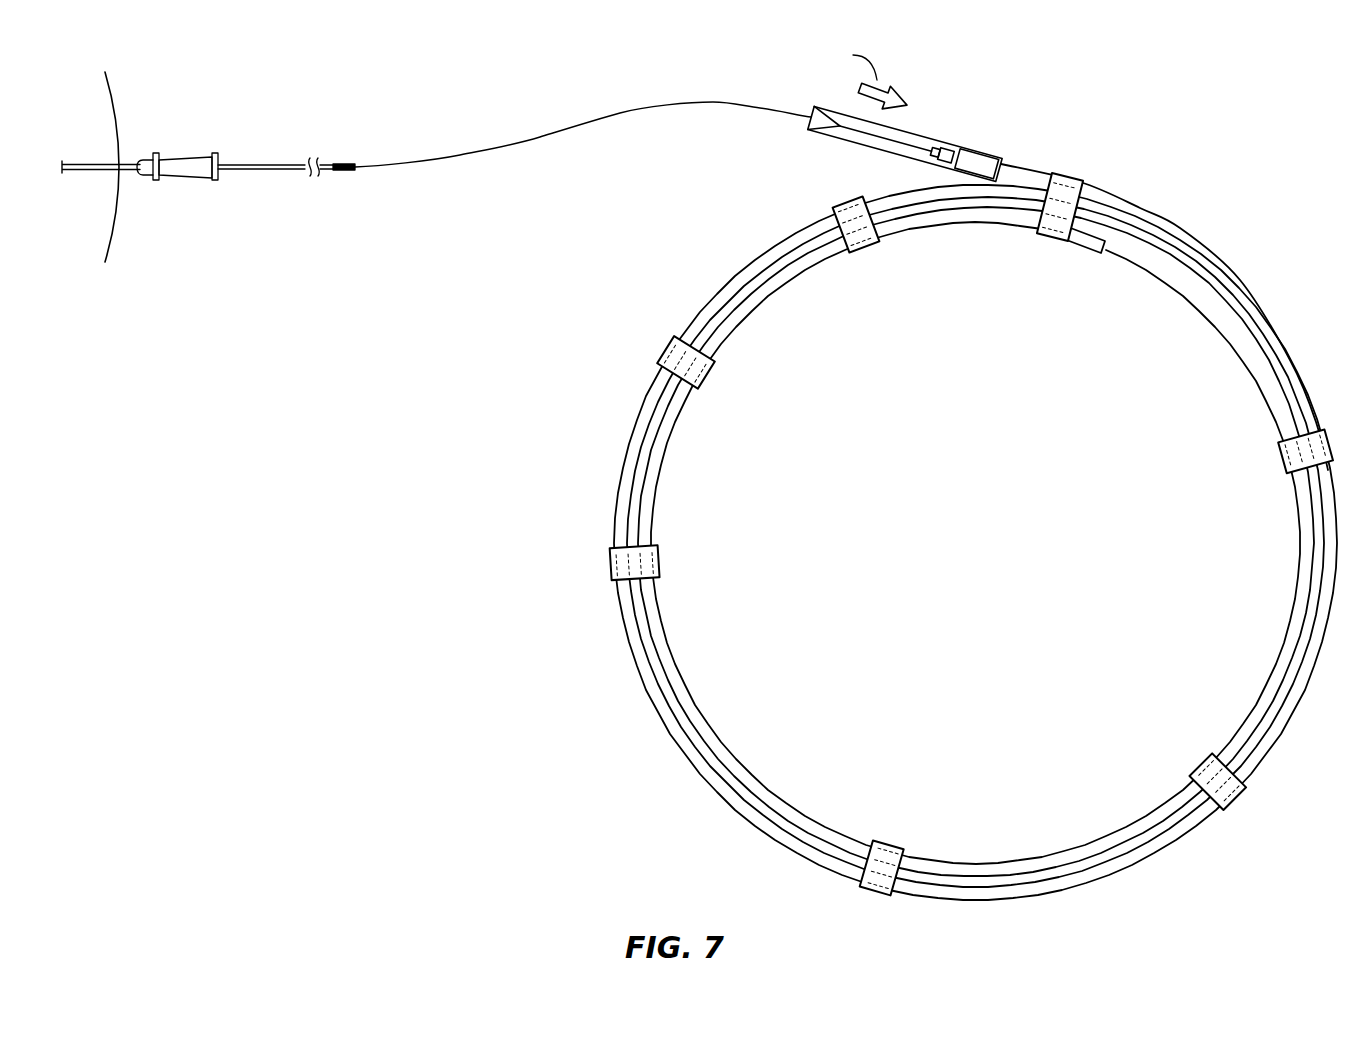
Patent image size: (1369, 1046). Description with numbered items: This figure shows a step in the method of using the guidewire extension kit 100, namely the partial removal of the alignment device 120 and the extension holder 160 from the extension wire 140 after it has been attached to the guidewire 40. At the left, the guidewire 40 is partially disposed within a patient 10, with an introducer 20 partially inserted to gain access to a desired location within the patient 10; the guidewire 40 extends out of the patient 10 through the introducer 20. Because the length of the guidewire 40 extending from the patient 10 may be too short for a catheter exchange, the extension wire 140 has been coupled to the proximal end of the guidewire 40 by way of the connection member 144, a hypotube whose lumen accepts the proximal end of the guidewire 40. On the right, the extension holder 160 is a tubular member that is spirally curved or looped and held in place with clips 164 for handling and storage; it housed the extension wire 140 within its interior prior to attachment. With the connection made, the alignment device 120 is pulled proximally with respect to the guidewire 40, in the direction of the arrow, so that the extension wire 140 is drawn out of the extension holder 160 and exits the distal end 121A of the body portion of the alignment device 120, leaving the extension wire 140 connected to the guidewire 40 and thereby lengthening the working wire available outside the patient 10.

The patient 10 is at (102, 113).
The introducer 20 is at (195, 155).
The guidewire 40 is at (263, 171).
The connection member 144 is at (343, 161).
The extension wire 140 is at (688, 101).
The alignment device 120 is at (1026, 279).
The distal end of body portion 121A is at (807, 117).
The extension holder 160 is at (1213, 258).
The clips 164 is at (866, 246).
The guidewire extension kit 100 is at (1246, 125).